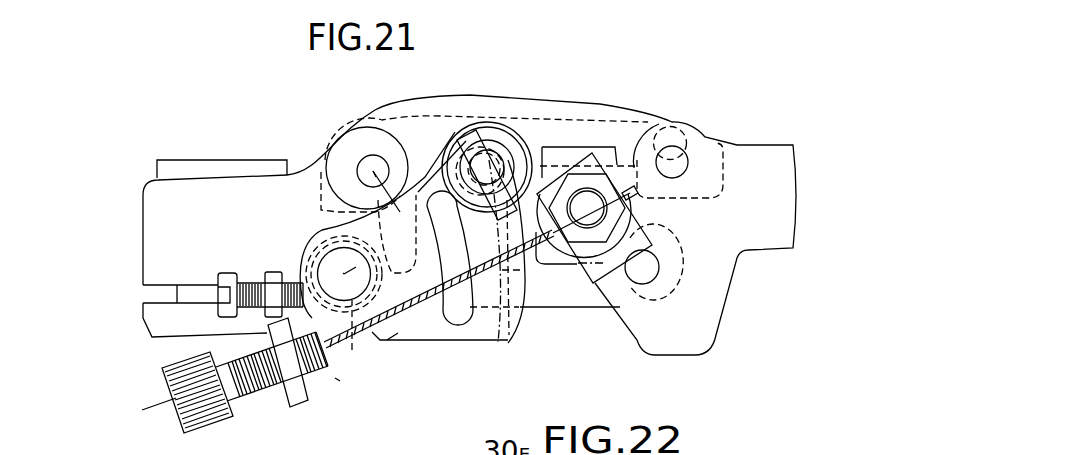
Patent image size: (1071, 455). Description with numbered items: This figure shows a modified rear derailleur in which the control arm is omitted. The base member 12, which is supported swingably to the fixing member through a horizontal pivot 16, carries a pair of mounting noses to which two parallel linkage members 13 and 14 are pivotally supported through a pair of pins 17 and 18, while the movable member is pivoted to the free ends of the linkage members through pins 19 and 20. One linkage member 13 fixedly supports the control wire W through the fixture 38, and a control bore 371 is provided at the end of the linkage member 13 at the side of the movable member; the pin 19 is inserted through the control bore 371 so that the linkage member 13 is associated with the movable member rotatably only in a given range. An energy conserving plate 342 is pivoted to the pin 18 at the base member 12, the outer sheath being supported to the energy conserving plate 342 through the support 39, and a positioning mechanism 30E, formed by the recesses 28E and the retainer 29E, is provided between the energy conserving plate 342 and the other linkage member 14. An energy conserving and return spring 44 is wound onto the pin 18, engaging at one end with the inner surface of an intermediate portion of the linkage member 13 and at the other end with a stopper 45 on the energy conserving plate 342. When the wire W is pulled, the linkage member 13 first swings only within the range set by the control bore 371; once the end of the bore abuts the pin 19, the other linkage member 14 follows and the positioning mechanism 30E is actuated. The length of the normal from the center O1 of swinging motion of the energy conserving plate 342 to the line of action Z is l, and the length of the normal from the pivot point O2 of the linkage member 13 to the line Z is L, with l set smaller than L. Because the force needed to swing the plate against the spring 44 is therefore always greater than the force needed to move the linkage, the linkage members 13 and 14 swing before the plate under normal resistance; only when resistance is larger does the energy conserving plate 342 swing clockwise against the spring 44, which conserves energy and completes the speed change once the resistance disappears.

The base member 12 is at (260, 178).
The linkage member 13 is at (530, 100).
The linkage member 14 is at (547, 309).
The horizontal pivot 16 is at (190, 298).
The pin 17 is at (363, 161).
The pin 18 is at (333, 298).
The pin 19 is at (681, 151).
The pin 20 is at (638, 274).
The recesses 28E is at (482, 150).
The retainer 29E is at (496, 158).
The positioning mechanism 30E is at (500, 33).
The fixture 38 is at (587, 197).
The support 39 is at (208, 425).
The energy conserving and return spring 44 is at (398, 333).
The stopper 45 is at (352, 350).
The energy conserving plate 342 is at (335, 378).
The control bore 371 is at (670, 127).
The center of swinging motion of energy conserving plate O1 is at (343, 273).
The pivot point of linkage member O2 is at (374, 166).
The length of the normal from pivot point O2 to line Z L is at (391, 207).
The length of the normal from center O1 to line Z l is at (355, 272).
The control wire W is at (435, 337).
The line of action Z is at (150, 415).